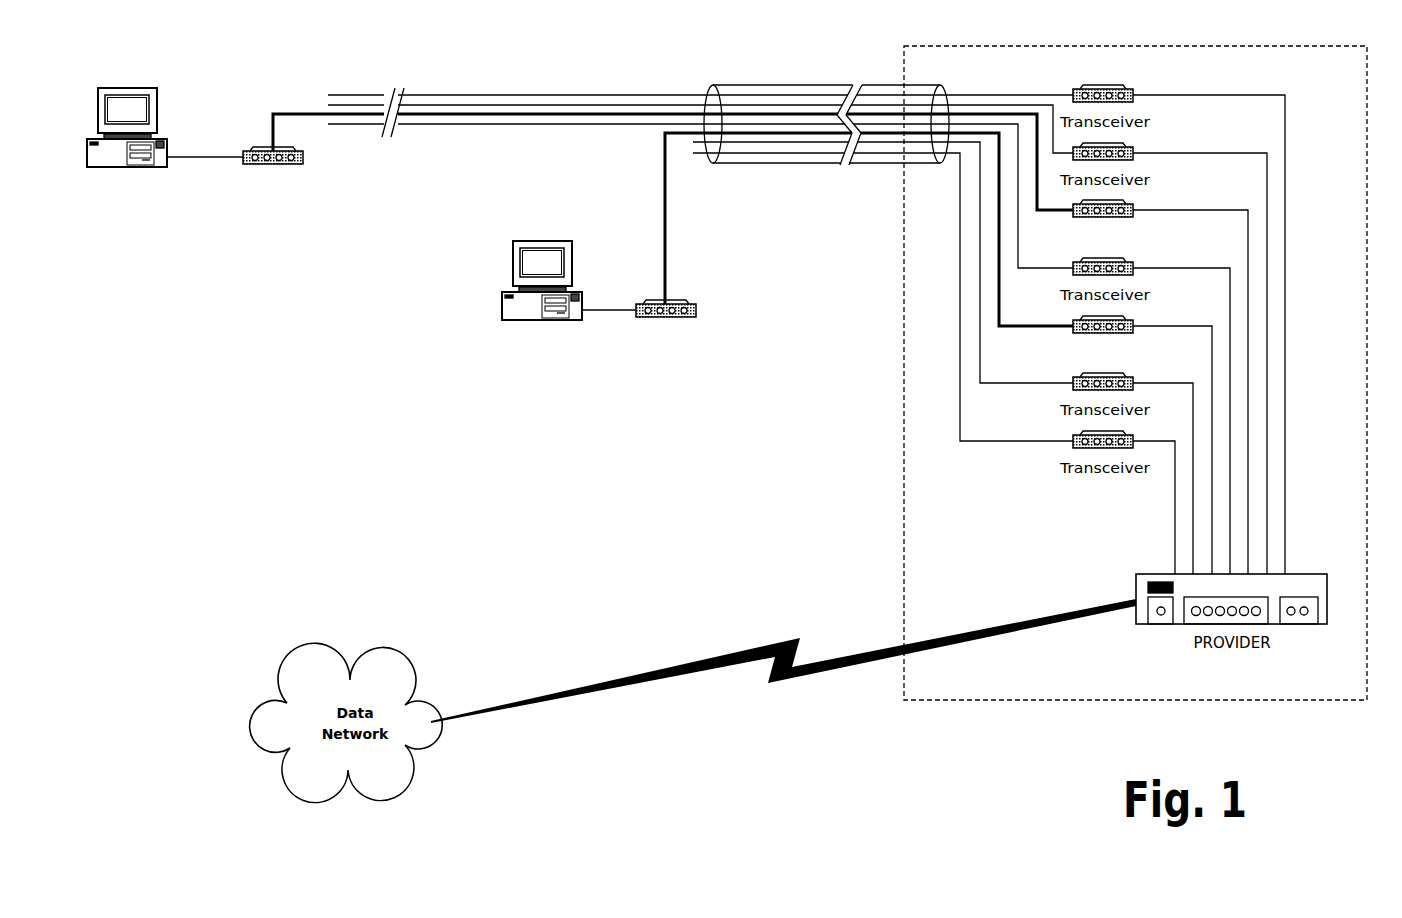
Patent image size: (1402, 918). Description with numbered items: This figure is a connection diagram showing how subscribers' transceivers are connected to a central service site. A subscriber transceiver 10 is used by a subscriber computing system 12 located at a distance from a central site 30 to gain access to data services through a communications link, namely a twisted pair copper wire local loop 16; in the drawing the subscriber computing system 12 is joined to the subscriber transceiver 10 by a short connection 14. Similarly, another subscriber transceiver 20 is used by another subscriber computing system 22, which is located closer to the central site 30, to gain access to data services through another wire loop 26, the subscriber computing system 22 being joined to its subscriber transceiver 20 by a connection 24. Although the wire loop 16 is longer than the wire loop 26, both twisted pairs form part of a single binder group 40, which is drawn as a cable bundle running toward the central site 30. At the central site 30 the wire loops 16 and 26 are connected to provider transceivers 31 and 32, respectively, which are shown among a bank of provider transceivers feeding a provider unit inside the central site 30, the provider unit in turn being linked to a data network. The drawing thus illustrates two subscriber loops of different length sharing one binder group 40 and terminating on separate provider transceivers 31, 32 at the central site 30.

The subscriber transceiver 10 is at (303, 157).
The subscriber computing system 12 is at (157, 107).
The subscriber connection cable 14 is at (190, 157).
The twisted pair copper wire local loop 16 is at (293, 113).
The subscriber transceiver 20 is at (697, 303).
The subscriber computing system 22 is at (512, 260).
The second subscriber connection cable 24 is at (602, 310).
The wire loop 26 is at (663, 197).
The central site 30 is at (905, 353).
The provider transceiver 31 is at (1133, 204).
The provider transceiver 32 is at (1133, 320).
The binder group 40 is at (742, 165).